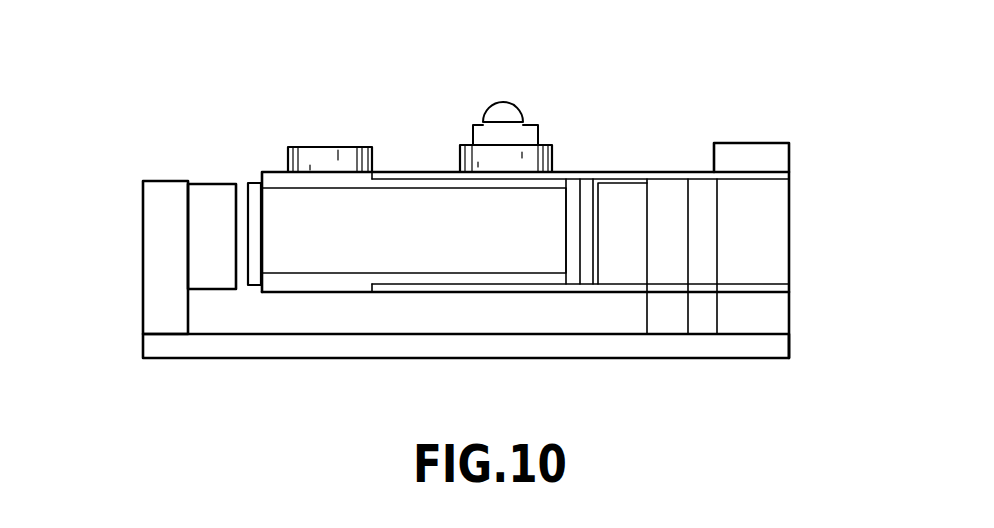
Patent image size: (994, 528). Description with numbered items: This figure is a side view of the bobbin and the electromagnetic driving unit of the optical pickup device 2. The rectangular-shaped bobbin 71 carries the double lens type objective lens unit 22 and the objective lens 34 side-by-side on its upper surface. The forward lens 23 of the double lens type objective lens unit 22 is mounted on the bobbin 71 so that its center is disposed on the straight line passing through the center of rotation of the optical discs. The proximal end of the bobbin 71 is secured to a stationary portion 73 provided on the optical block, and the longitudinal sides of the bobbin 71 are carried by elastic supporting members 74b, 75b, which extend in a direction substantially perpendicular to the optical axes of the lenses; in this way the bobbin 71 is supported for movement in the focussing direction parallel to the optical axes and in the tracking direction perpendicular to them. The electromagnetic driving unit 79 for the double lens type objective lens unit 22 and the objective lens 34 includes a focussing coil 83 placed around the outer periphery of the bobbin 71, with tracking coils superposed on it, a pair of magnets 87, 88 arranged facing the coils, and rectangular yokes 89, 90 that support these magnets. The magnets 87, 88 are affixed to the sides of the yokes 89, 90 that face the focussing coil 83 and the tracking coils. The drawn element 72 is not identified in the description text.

The optical pickup device 2 is at (760, 77).
The double lens type objective lens unit 22 is at (540, 107).
The forward lens 23 is at (502, 130).
The objective lens 34 is at (348, 147).
The bobbin 71 is at (273, 178).
The base plate 72 is at (270, 359).
The stationary portion 73 is at (773, 198).
The elastic supporting member 74b is at (637, 170).
The elastic supporting member 75b is at (582, 292).
The electromagnetic driving unit 79 is at (156, 198).
The focussing coil 83 is at (430, 255).
The magnet 87 is at (612, 227).
The magnet 88 is at (207, 183).
The yoke 89 is at (678, 262).
The yoke 90 is at (142, 232).